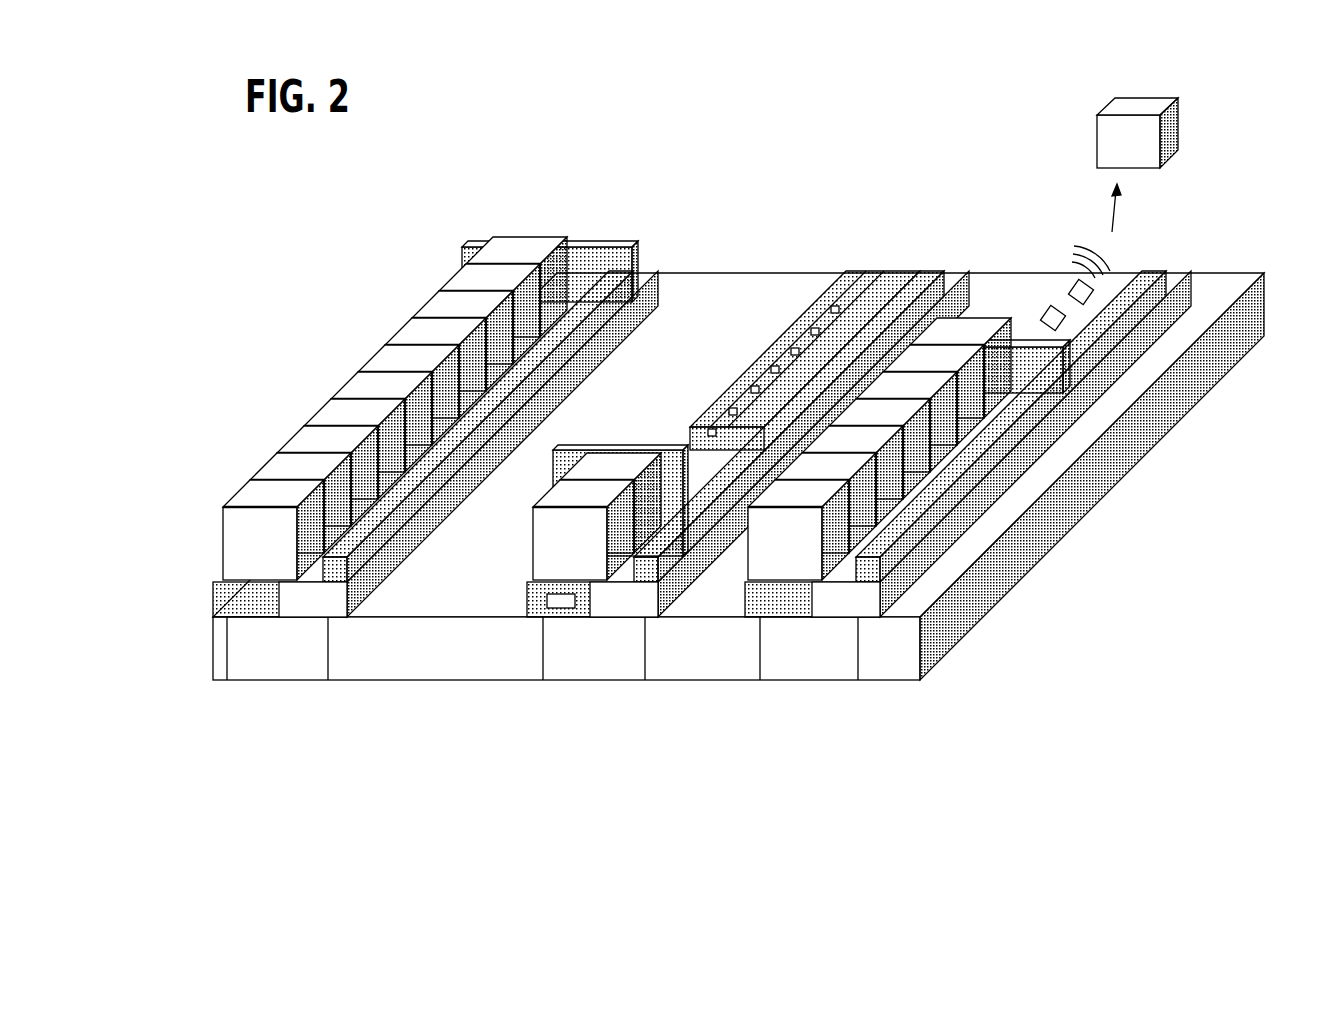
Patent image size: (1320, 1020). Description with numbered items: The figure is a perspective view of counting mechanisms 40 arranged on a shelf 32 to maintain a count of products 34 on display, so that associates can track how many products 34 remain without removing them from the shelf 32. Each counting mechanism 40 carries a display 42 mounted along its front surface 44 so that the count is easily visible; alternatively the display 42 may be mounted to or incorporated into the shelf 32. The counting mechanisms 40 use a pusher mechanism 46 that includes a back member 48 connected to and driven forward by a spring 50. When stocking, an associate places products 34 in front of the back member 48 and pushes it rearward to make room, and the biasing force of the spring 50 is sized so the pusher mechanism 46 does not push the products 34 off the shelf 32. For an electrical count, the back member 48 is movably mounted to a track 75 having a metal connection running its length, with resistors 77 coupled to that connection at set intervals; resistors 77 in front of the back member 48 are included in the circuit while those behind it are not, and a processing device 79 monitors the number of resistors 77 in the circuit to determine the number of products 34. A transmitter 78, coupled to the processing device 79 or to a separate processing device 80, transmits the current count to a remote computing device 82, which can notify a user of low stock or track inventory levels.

The shelf 32 is at (767, 290).
The products 34 is at (300, 442).
The counting mechanism 40 is at (406, 606).
The display 42 is at (330, 605).
The front surface 44 is at (225, 600).
The pusher mechanism 46 is at (935, 518).
The back member 48 is at (598, 258).
The spring 50 is at (597, 320).
The track 75 is at (893, 285).
The resistors 77 is at (748, 395).
The transmitter 78 is at (1070, 283).
The processing device 79 is at (563, 608).
The separate processing device 80 is at (1042, 310).
The remote computing device 82 is at (1179, 100).